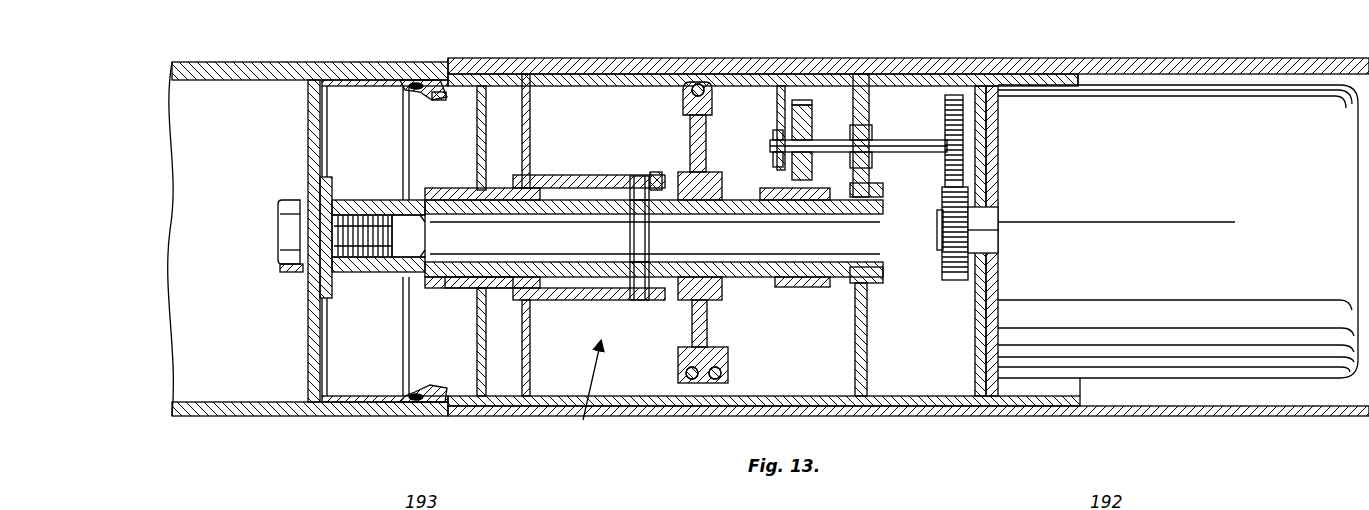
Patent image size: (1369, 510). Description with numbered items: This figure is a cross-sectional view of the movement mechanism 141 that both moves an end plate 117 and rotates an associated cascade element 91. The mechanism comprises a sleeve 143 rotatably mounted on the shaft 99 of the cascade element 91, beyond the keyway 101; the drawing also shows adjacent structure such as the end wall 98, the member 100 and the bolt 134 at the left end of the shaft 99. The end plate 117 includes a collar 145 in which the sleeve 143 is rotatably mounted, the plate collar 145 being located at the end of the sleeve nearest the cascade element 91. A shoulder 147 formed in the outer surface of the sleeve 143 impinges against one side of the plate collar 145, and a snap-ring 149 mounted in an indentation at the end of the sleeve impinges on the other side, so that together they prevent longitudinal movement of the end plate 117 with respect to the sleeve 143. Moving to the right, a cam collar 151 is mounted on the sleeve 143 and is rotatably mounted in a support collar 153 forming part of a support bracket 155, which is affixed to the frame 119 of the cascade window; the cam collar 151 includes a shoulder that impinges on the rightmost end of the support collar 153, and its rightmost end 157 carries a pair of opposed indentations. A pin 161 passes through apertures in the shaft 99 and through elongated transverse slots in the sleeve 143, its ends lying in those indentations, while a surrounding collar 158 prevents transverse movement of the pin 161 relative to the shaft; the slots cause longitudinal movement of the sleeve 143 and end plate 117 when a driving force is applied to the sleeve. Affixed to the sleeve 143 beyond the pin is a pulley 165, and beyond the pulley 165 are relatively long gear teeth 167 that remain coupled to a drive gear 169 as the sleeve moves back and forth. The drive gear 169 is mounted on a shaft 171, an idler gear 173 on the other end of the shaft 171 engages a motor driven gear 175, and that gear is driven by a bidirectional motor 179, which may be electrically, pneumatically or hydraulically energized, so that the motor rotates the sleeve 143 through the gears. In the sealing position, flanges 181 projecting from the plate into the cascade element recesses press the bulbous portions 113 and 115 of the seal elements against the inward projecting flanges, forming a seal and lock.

The cascade element 91 is at (262, 414).
The end wall 98 is at (312, 148).
The shaft 99 is at (368, 272).
The cup member 100 is at (331, 162).
The keyway 101 is at (358, 200).
The bulbous portion 113 is at (437, 78).
The bulbous portion 115 is at (406, 418).
The end plate 117 is at (478, 149).
The frame 119 is at (672, 66).
The bolt 134 is at (272, 240).
The movement mechanism 141 is at (598, 398).
The sleeve 143 is at (562, 198).
The collar 145 is at (453, 290).
The shoulder 147 is at (482, 188).
The snap-ring 149 is at (421, 288).
The cam collar 151 is at (577, 300).
The support collar 153 is at (538, 176).
The support bracket 155 is at (530, 123).
The rightmost end 157 is at (627, 176).
The surrounding collar 158 is at (622, 300).
The pin 161 is at (649, 243).
The pulley 165 is at (706, 138).
The gear teeth 167 is at (790, 283).
The drive gear 169 is at (812, 122).
The shaft 171 is at (900, 140).
The idler gear 173 is at (945, 166).
The motor driven gear 175 is at (948, 282).
The bidirectional motor 179 is at (1152, 372).
The flanges 181 is at (441, 100).